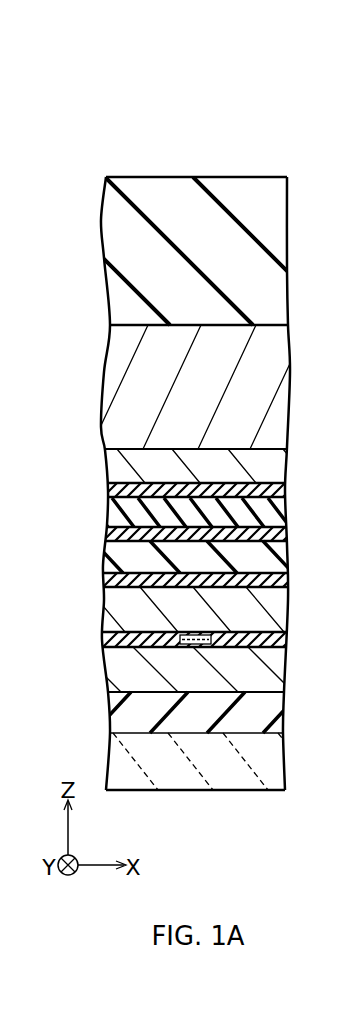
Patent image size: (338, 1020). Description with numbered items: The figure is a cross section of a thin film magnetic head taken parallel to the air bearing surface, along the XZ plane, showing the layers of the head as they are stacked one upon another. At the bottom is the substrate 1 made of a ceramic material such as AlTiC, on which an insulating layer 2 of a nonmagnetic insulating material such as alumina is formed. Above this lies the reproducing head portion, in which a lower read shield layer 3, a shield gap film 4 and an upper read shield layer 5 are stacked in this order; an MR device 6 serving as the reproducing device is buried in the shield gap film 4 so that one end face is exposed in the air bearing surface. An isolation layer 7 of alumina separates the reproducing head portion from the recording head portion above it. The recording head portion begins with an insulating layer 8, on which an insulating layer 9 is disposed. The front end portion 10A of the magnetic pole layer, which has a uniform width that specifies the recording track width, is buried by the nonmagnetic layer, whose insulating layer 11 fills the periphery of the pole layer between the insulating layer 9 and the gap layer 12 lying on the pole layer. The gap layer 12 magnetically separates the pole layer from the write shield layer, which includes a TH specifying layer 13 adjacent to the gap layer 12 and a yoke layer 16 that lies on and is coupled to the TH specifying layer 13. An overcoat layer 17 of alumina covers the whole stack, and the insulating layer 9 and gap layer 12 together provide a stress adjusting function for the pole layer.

The substrate 1 is at (276, 779).
The insulating layer 2 is at (253, 713).
The lower read shield layer 3 is at (226, 672).
The shield gap film 4 is at (172, 644).
The upper read shield layer 5 is at (163, 620).
The MR device 6 is at (200, 648).
The isolation layer 7 is at (135, 588).
The insulating layer 8 is at (121, 553).
The insulating layer 9 is at (118, 523).
The front end portion 10A is at (262, 503).
The insulating layer 11 is at (282, 455).
The gap layer 12 is at (158, 481).
The TH specifying layer 13 is at (193, 457).
The yoke layer 16 is at (217, 336).
The overcoat layer 17 is at (204, 513).